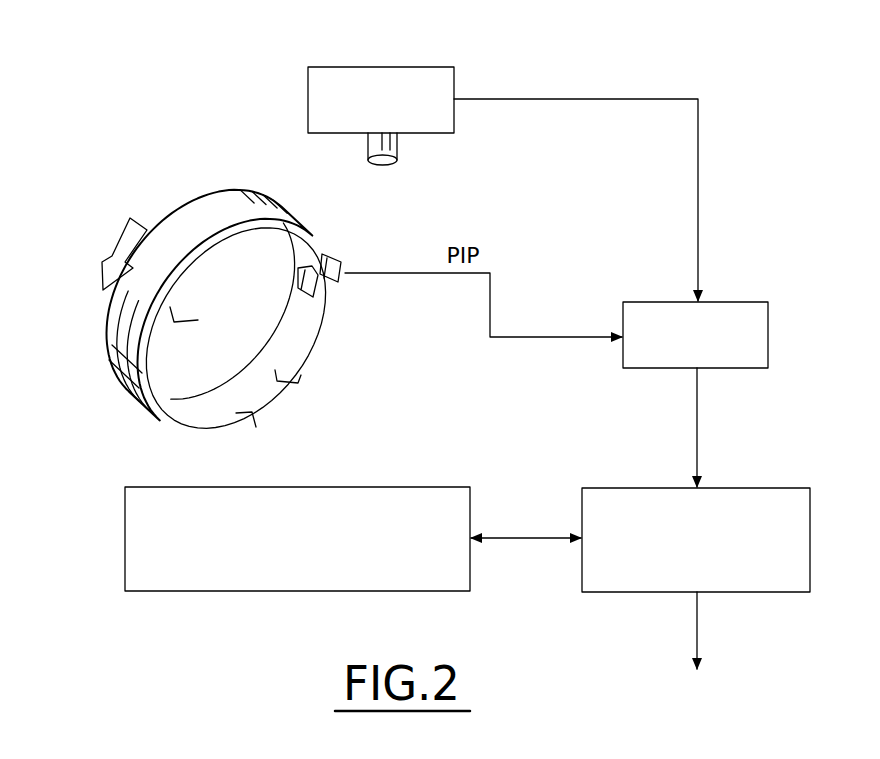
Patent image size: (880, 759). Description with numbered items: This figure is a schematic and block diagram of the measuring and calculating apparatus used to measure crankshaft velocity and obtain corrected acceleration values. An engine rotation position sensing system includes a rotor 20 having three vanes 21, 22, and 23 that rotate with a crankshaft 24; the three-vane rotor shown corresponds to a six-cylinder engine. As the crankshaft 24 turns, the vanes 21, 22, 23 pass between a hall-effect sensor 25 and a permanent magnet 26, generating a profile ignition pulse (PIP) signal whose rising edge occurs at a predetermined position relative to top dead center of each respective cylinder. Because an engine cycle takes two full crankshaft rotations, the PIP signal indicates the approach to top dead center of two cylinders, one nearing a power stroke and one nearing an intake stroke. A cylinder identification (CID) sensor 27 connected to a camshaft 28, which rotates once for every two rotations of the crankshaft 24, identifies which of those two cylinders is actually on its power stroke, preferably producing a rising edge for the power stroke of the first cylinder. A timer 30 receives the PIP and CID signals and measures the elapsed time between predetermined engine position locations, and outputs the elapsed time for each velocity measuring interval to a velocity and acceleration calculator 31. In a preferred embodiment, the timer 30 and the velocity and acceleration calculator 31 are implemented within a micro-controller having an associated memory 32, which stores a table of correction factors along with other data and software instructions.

The rotor 20 is at (242, 237).
The vane 21 is at (217, 288).
The vane 22 is at (325, 347).
The vane 23 is at (227, 433).
The crankshaft 24 is at (183, 223).
The hall-effect sensor 25 is at (337, 257).
The permanent magnet 26 is at (308, 300).
The cylinder identification (CID) sensor 27 is at (415, 66).
The camshaft 28 is at (397, 150).
The timer 30 is at (732, 302).
The velocity and acceleration calculator 31 is at (745, 488).
The memory 32 is at (357, 485).